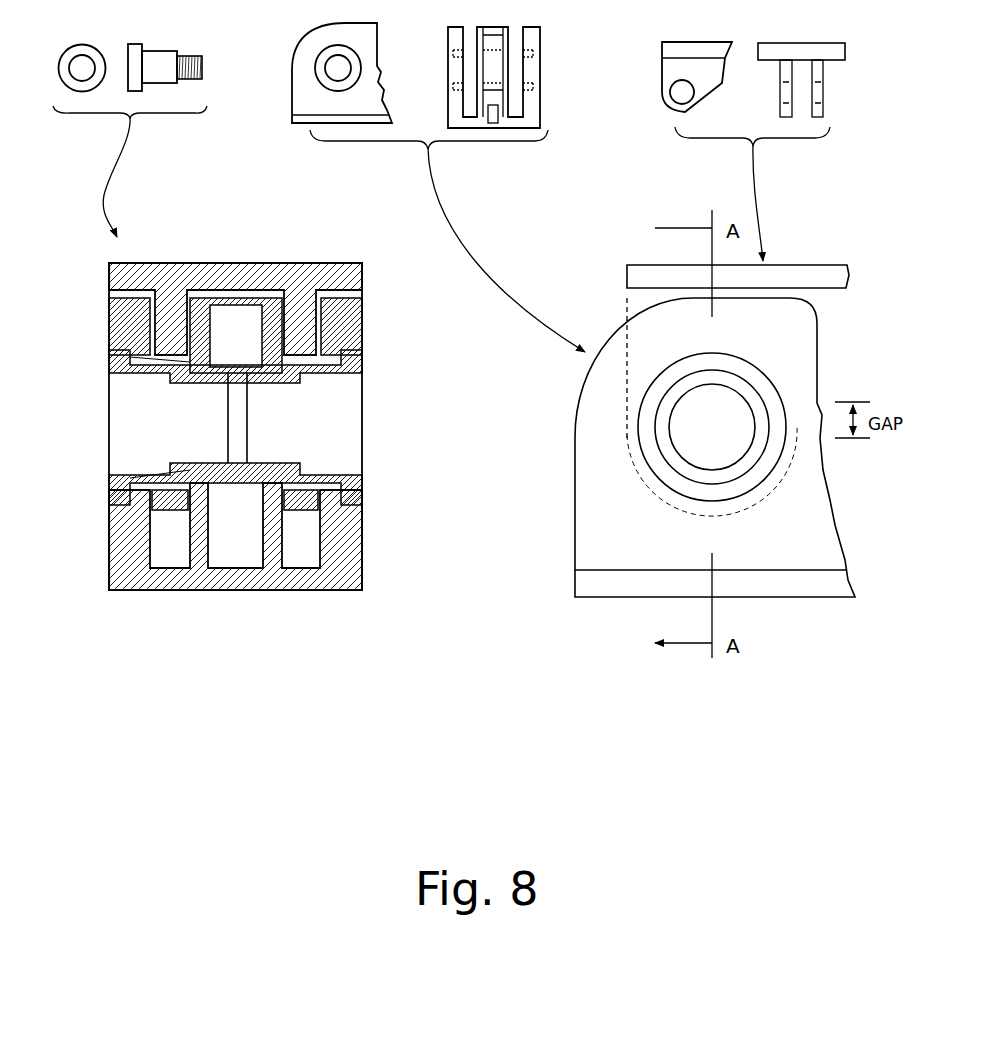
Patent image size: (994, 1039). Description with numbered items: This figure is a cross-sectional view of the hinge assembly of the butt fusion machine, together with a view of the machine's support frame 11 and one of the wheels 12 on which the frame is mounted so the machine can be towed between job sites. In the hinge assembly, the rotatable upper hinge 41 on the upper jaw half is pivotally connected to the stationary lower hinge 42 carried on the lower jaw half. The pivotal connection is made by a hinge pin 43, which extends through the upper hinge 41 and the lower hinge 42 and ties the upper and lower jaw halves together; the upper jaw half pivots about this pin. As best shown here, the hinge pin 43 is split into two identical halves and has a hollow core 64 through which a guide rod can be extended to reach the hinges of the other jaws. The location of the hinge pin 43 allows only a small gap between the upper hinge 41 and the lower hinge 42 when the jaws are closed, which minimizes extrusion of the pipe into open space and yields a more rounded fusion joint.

The support frame 11 is at (650, 262).
The wheels 12 is at (577, 395).
The upper hinge 41 is at (200, 265).
The lower hinge 42 is at (343, 582).
The hinge pin 43 is at (117, 360).
The hollow core 64 is at (362, 315).